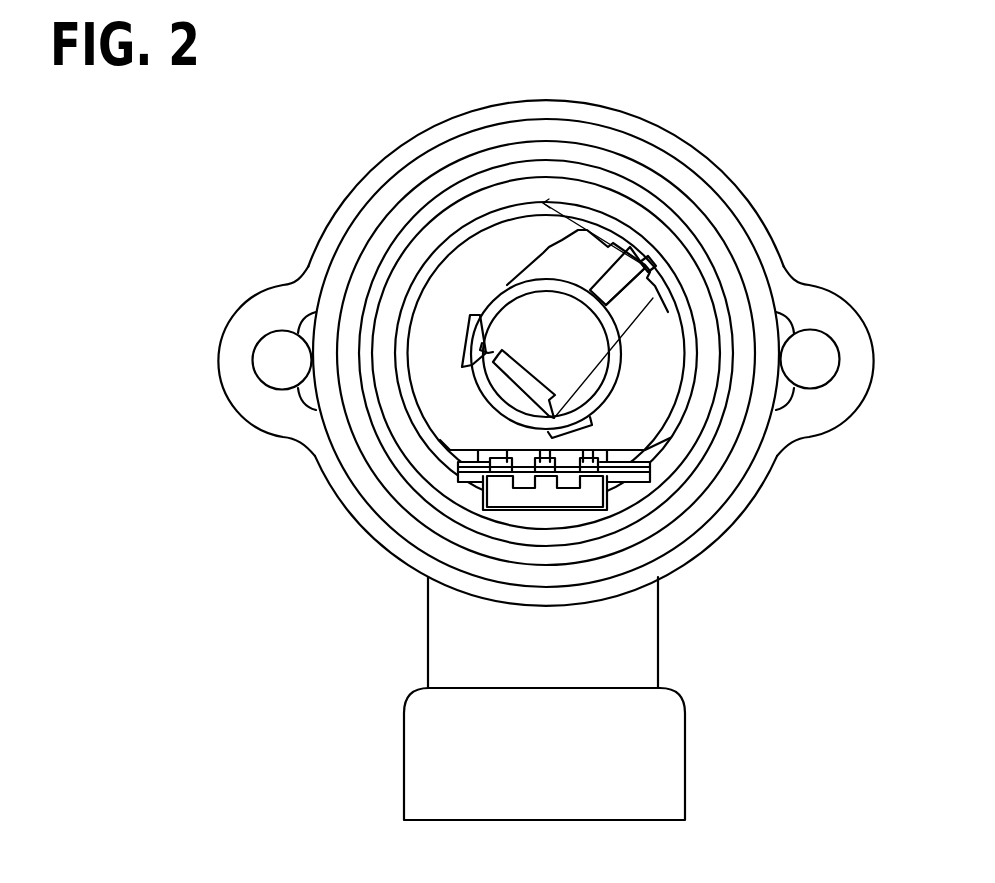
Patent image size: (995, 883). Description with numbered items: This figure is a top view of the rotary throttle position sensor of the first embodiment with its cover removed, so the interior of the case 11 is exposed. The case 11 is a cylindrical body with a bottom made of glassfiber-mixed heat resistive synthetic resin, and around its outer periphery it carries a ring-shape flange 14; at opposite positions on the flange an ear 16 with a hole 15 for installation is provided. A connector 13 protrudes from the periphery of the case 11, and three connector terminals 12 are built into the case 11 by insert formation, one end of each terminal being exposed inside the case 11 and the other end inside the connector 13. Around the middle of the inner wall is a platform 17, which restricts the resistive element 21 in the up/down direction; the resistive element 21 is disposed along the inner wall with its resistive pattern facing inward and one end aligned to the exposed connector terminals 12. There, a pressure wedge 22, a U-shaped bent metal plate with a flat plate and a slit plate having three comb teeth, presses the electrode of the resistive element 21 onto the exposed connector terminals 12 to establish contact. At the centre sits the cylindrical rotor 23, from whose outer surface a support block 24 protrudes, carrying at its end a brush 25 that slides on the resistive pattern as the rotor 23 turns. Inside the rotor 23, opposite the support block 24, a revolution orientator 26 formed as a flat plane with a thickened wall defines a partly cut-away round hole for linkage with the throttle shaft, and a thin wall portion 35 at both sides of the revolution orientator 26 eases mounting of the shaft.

The case 11 is at (405, 197).
The connector terminals 12 is at (493, 468).
The connector 13 is at (647, 640).
The ring-shape flange 14 is at (355, 485).
The hole 15 is at (270, 347).
The ear 16 is at (237, 367).
The platform 17 is at (507, 220).
The resistive element 21 is at (457, 227).
The pressure wedge 22 is at (597, 497).
The rotor 23 is at (606, 472).
The support block 24 is at (640, 323).
The brush 25 is at (607, 218).
The revolution orientator 26 is at (498, 357).
The thin wall portion 35 is at (465, 360).